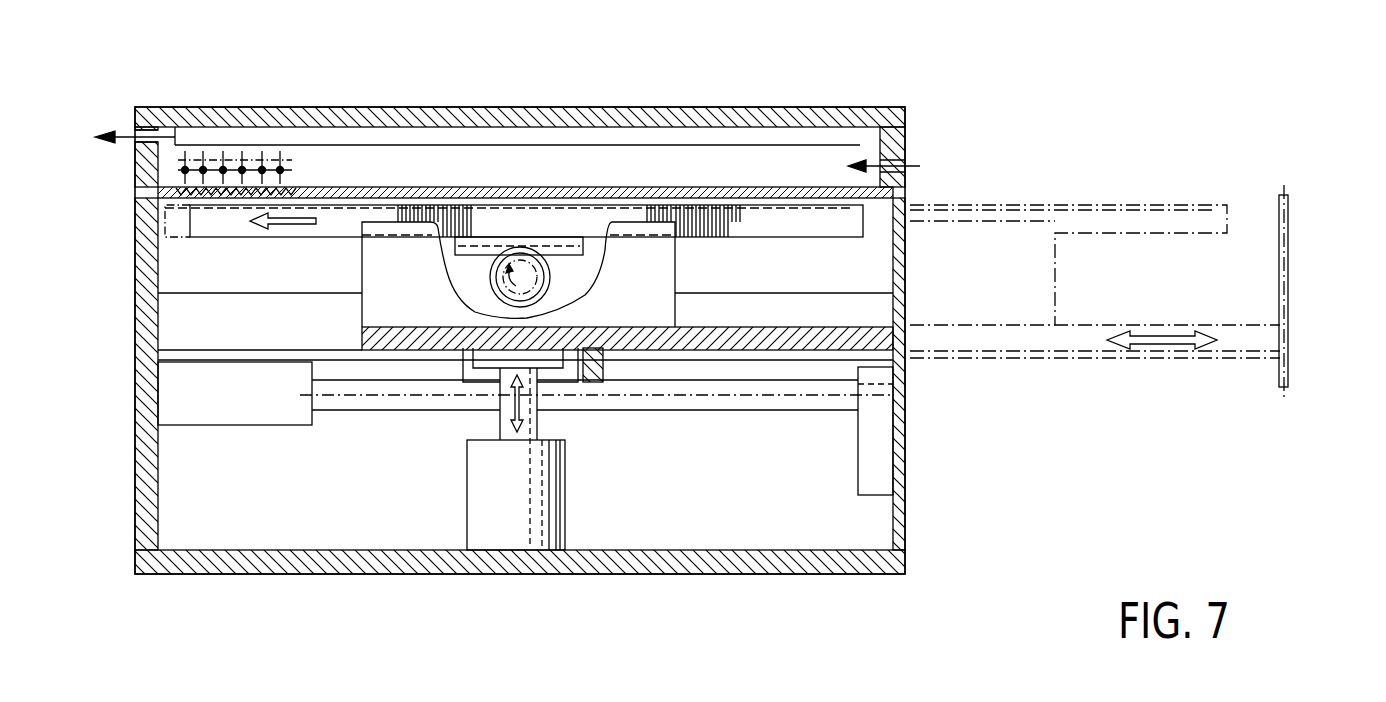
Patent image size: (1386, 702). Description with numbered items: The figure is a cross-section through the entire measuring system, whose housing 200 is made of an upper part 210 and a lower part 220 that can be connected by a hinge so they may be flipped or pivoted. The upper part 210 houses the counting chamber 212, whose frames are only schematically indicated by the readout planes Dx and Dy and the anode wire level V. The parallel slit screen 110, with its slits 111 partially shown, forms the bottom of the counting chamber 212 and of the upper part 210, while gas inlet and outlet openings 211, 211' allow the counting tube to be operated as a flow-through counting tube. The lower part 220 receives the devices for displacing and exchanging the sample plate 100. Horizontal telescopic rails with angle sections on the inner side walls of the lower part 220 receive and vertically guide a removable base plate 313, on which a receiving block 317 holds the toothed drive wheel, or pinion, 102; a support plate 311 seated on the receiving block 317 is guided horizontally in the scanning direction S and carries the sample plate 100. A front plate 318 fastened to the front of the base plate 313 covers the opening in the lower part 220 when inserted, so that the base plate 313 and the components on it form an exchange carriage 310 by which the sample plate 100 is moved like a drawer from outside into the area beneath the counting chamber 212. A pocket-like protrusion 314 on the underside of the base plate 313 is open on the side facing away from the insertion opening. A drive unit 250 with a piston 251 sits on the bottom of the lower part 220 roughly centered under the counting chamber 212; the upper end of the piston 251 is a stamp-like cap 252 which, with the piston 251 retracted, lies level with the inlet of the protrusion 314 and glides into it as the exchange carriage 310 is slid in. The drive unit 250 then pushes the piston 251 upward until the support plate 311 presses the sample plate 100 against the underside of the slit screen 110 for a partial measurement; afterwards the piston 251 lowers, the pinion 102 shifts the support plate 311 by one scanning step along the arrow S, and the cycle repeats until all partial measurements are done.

The housing 200 is at (531, 88).
The upper part 210 is at (887, 105).
The lower part 220 is at (713, 560).
The counting chamber 212 is at (712, 133).
The gas inlet opening 211 is at (915, 148).
The gas outlet opening 211' is at (111, 153).
The parallel slit screen 110 is at (605, 187).
The sample plate 100 is at (790, 210).
The slits 111 is at (219, 206).
The toothed drive wheel (pinion) 102 is at (498, 284).
The support plate 311 is at (842, 220).
The receiving block 317 is at (660, 268).
The cap 252 is at (487, 355).
The piston 251 is at (524, 425).
The pocket-like protrusion 314 is at (603, 365).
The drive unit 250 is at (547, 508).
The exchange carriage 310 is at (1178, 200).
The base plate 313 is at (1098, 340).
The front plate 318 is at (1290, 312).
The scanning direction S is at (292, 228).
The anode wire level V is at (289, 165).
The readout plane Dx is at (203, 165).
The readout plane Dy is at (284, 175).